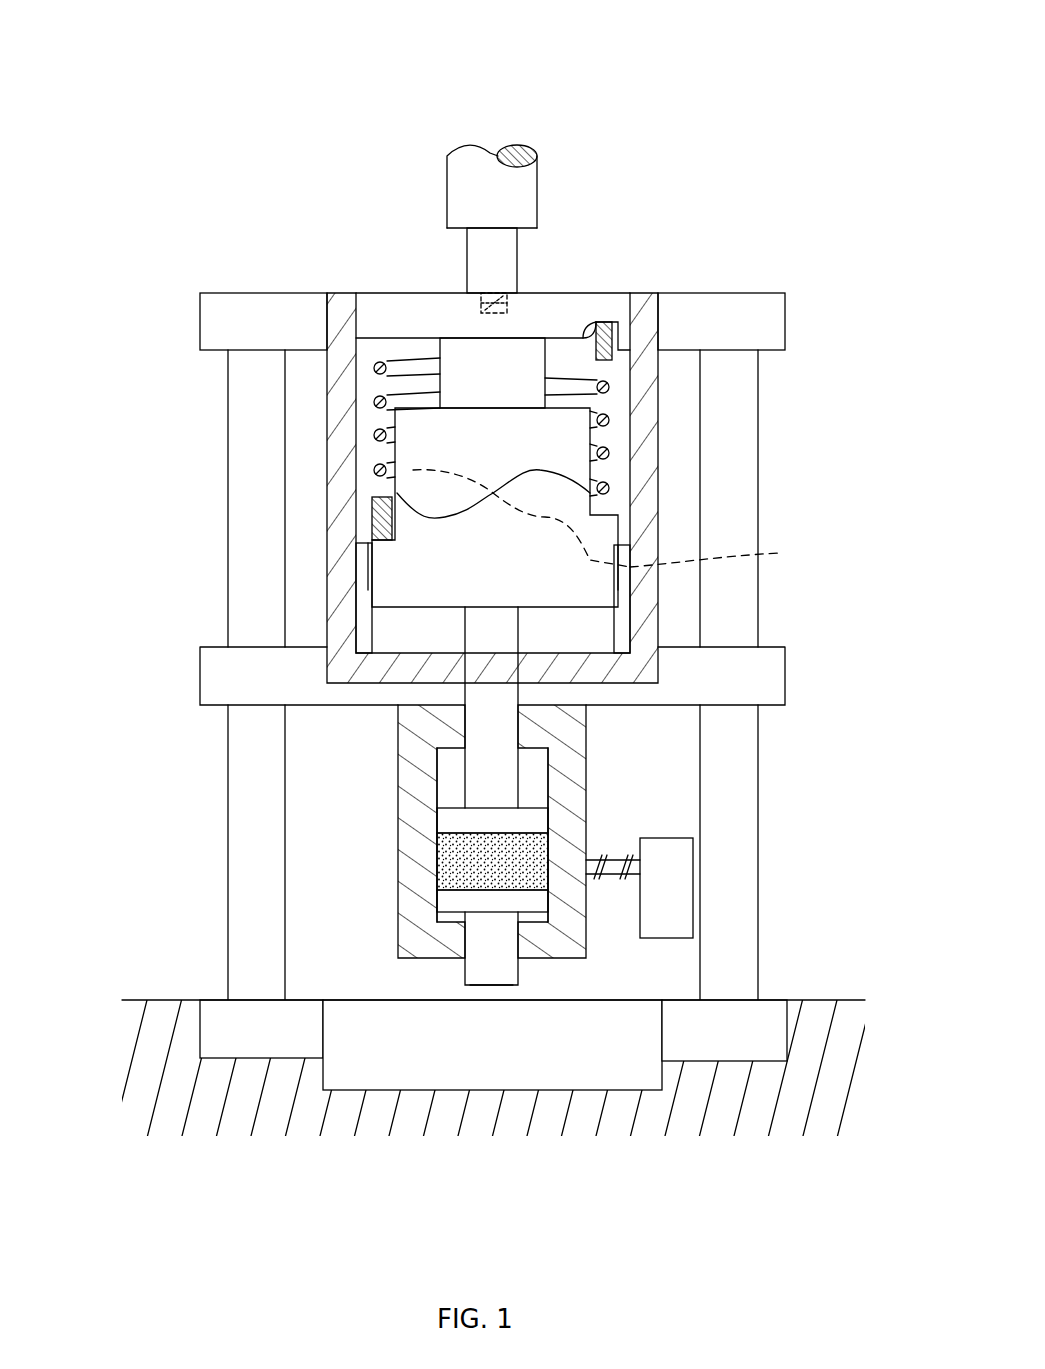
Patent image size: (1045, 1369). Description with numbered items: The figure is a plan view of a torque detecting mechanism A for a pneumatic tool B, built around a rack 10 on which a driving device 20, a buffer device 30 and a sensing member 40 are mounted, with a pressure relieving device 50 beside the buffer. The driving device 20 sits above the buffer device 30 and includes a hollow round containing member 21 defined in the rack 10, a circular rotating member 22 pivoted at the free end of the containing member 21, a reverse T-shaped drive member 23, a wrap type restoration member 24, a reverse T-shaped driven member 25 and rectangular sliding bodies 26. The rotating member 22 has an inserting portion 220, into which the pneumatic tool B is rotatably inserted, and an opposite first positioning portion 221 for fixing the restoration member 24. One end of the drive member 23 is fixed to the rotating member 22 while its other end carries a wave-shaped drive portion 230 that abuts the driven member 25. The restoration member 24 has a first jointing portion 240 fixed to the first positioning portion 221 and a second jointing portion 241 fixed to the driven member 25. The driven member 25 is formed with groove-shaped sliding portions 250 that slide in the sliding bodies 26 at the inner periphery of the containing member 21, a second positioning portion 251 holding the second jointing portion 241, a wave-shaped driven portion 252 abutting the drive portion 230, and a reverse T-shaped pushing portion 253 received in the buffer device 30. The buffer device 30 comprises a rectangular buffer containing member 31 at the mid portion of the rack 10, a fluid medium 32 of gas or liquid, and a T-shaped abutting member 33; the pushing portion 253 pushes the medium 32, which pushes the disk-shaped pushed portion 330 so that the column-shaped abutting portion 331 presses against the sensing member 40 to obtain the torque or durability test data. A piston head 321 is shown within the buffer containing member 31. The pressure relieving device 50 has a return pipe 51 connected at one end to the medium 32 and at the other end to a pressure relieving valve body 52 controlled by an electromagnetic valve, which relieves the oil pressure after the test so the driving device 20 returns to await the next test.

The torque detecting mechanism A is at (773, 61).
The pneumatic tool B is at (473, 173).
The rack 10 is at (720, 302).
The driving device 20 is at (220, 598).
The containing member 21 is at (650, 425).
The rotating member 22 is at (390, 317).
The inserting portion 220 is at (470, 300).
The first positioning portion 221 is at (605, 320).
The drive member 23 is at (400, 422).
The drive portion 230 is at (395, 493).
The restoration member 24 is at (565, 352).
The first jointing portion 240 is at (660, 338).
The second jointing portion 241 is at (372, 555).
The driven member 25 is at (567, 583).
The sliding portions 250 is at (620, 553).
The second positioning portion 251 is at (370, 515).
The driven portion 252 is at (734, 552).
The pushing portion 253 is at (475, 733).
The sliding bodies 26 is at (627, 630).
The buffer device 30 is at (281, 853).
The buffer containing member 31 is at (410, 907).
The fluid medium 32 is at (525, 863).
The piston head 321 is at (448, 815).
The abutting member 33 is at (478, 972).
The pushed portion 330 is at (437, 865).
The abutting portion 331 is at (492, 985).
The sensing member 40 is at (492, 1116).
The pressure relieving device 50 is at (712, 896).
The return pipe 51 is at (616, 858).
The pressure relieving valve body 52 is at (668, 868).